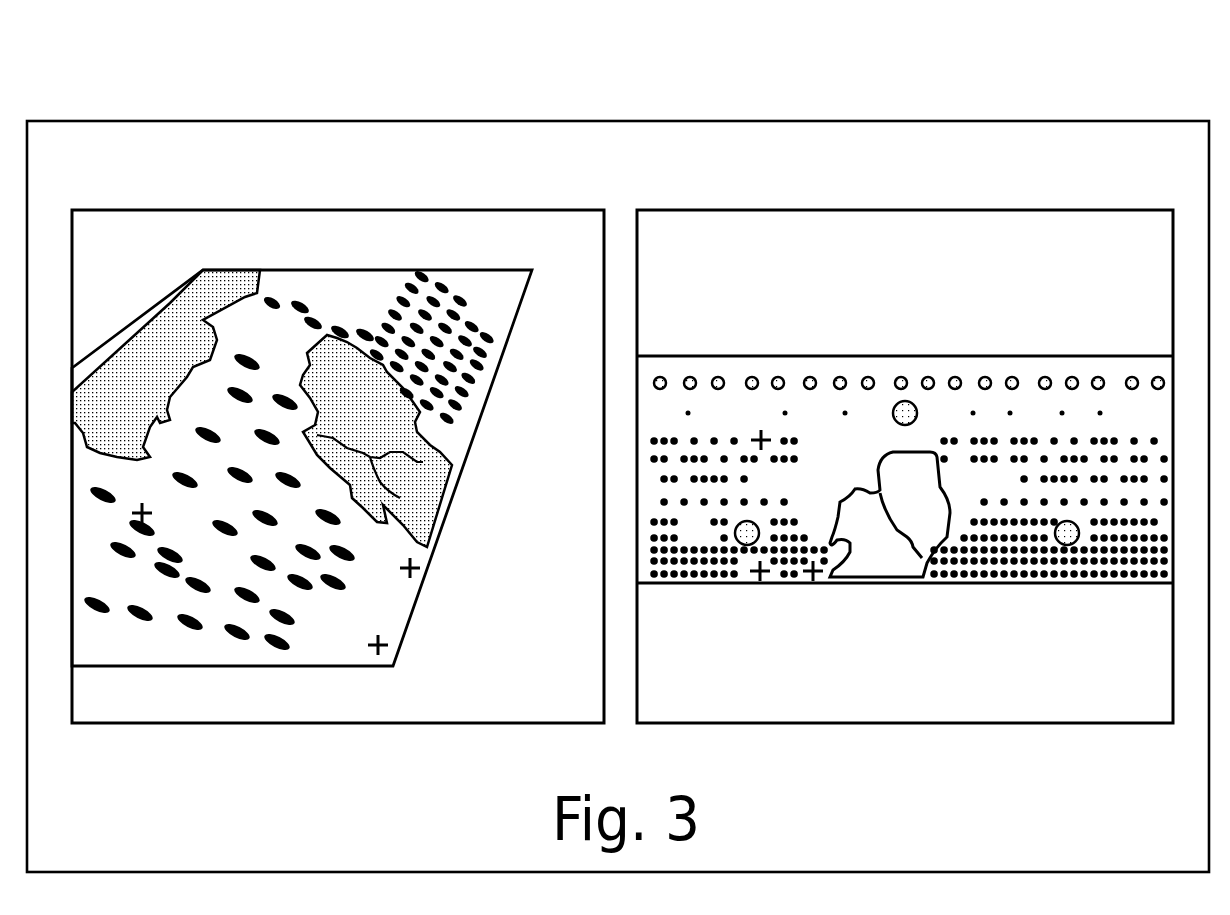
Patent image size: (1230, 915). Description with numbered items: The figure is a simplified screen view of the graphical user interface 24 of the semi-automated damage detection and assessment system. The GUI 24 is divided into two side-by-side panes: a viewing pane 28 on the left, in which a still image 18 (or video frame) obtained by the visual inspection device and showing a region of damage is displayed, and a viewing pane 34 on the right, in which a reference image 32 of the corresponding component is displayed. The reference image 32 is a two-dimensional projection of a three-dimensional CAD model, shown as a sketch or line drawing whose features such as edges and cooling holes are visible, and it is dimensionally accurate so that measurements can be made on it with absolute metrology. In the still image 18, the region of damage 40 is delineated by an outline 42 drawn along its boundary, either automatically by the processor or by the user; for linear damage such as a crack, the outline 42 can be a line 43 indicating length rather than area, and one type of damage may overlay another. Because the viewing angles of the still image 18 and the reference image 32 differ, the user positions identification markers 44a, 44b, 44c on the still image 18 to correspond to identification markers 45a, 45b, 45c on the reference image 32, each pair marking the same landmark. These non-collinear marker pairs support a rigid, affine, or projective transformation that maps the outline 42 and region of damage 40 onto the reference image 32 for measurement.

The graphical user interface 24 is at (870, 107).
The viewing pane 28 is at (520, 209).
The viewing pane 34 is at (1027, 209).
The still image 18 is at (402, 270).
The reference image 32 is at (945, 355).
The region of damage 40 is at (378, 415).
The outline 42 is at (356, 350).
The line 43 is at (392, 485).
The identification marker 44a is at (387, 648).
The identification marker 44b is at (420, 570).
The identification marker 44c is at (148, 522).
The identification marker 45a is at (757, 580).
The identification marker 45b is at (817, 580).
The identification marker 45c is at (757, 437).